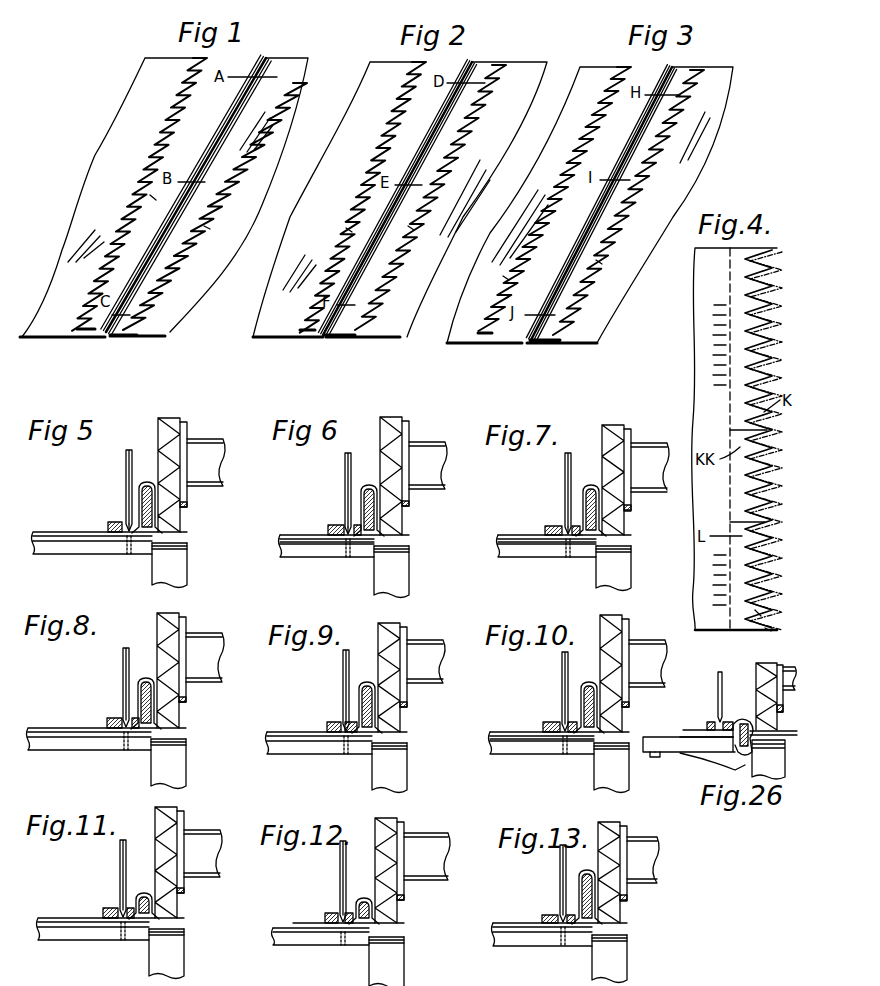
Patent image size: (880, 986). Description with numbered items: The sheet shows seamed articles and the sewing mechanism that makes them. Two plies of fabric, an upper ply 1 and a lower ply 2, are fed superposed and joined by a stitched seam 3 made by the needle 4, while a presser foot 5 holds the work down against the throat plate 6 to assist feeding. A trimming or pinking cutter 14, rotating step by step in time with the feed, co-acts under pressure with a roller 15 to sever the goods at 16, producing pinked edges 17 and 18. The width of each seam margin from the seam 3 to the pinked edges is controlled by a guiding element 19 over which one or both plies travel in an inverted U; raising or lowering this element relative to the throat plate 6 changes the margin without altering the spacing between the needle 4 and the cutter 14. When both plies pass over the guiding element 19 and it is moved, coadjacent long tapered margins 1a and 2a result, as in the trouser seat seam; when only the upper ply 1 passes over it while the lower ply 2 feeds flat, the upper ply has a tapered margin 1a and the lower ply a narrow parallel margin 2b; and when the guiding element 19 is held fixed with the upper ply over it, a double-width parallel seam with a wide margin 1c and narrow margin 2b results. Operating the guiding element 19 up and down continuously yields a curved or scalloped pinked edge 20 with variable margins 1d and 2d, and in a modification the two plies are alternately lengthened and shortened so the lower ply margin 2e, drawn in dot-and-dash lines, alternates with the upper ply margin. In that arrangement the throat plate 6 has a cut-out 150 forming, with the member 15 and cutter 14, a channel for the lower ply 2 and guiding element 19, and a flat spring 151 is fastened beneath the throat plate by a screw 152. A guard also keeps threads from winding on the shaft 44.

In FIG. 1, the upper ply 1 is at (42, 336).
In FIG. 2, the upper ply 1 is at (272, 341).
In FIG. 3, the upper ply 1 is at (462, 345).
In FIG. 4, the upper ply 1 is at (706, 632).
In FIG. 6, the upper ply 1 is at (320, 521).
In FIG. 7, the upper ply 1 is at (540, 523).
In FIG. 9, the upper ply 1 is at (337, 700).
In FIG. 10, the upper ply 1 is at (559, 691).
In FIG. 12, the upper ply 1 is at (348, 905).
In FIG. 13, the upper ply 1 is at (560, 883).
In FIG. 26, the upper ply 1 is at (690, 729).
In FIG. 1, the lower ply 2 is at (150, 338).
In FIG. 2, the lower ply 2 is at (380, 341).
In FIG. 3, the lower ply 2 is at (577, 346).
In FIG. 6, the lower ply 2 is at (344, 559).
In FIG. 7, the lower ply 2 is at (564, 559).
In FIG. 10, the lower ply 2 is at (542, 762).
In FIG. 12, the lower ply 2 is at (319, 912).
In FIG. 26, the lower ply 2 is at (679, 736).
In FIG. 1, the stitched seam 3 is at (106, 340).
In FIG. 2, the stitched seam 3 is at (323, 343).
In FIG. 3, the stitched seam 3 is at (527, 346).
In FIG. 4, the stitched seam 3 is at (731, 632).
In FIG. 5, the stitched seam 3 is at (133, 554).
In FIG. 6, the stitched seam 3 is at (349, 555).
In FIG. 7, the stitched seam 3 is at (563, 555).
In FIG. 5, the needle 4 is at (112, 490).
In FIG. 6, the needle 4 is at (333, 493).
In FIG. 7, the needle 4 is at (552, 493).
In FIG. 8, the needle 4 is at (112, 687).
In FIG. 9, the needle 4 is at (332, 690).
In FIG. 10, the needle 4 is at (550, 691).
In FIG. 11, the needle 4 is at (108, 878).
In FIG. 12, the needle 4 is at (331, 881).
In FIG. 13, the needle 4 is at (551, 883).
In FIG. 26, the needle 4 is at (716, 680).
In FIG. 5, the presser foot 5 is at (100, 515).
In FIG. 6, the presser foot 5 is at (340, 512).
In FIG. 7, the presser foot 5 is at (559, 514).
In FIG. 11, the presser foot 5 is at (107, 904).
In FIG. 12, the presser foot 5 is at (333, 905).
In FIG. 5, the throat plate 6 is at (110, 553).
In FIG. 6, the throat plate 6 is at (327, 546).
In FIG. 7, the throat plate 6 is at (545, 559).
In FIG. 8, the throat plate 6 is at (107, 755).
In FIG. 9, the throat plate 6 is at (319, 759).
In FIG. 10, the throat plate 6 is at (542, 759).
In FIG. 11, the throat plate 6 is at (111, 943).
In FIG. 12, the throat plate 6 is at (321, 949).
In FIG. 13, the throat plate 6 is at (542, 949).
In FIG. 26, the throat plate 6 is at (688, 745).
In FIG. 5, the trimming cutter 14 is at (193, 475).
In FIG. 6, the trimming cutter 14 is at (412, 472).
In FIG. 7, the trimming cutter 14 is at (632, 467).
In FIG. 8, the trimming cutter 14 is at (193, 660).
In FIG. 9, the trimming cutter 14 is at (412, 664).
In FIG. 10, the trimming cutter 14 is at (636, 668).
In FIG. 11, the trimming cutter 14 is at (193, 858).
In FIG. 12, the trimming cutter 14 is at (408, 863).
In FIG. 13, the trimming cutter 14 is at (631, 863).
In FIG. 26, the trimming cutter 14 is at (756, 678).
In FIG. 5, the roller 15 is at (185, 565).
In FIG. 6, the roller 15 is at (409, 572).
In FIG. 7, the roller 15 is at (631, 568).
In FIG. 8, the roller 15 is at (168, 764).
In FIG. 9, the roller 15 is at (389, 768).
In FIG. 10, the roller 15 is at (611, 768).
In FIG. 11, the roller 15 is at (166, 954).
In FIG. 13, the roller 15 is at (609, 959).
In FIG. 26, the roller 15 is at (768, 759).
In FIG. 5, the severing point 16 is at (190, 537).
In FIG. 6, the severing point 16 is at (409, 558).
In FIG. 7, the severing point 16 is at (634, 555).
In FIG. 1, the pinked edge 17 is at (160, 160).
In FIG. 2, the pinked edge 17 is at (365, 195).
In FIG. 3, the pinked edge 17 is at (583, 156).
In FIG. 1, the pinked edge 18 is at (236, 185).
In FIG. 2, the pinked edge 18 is at (405, 245).
In FIG. 3, the pinked edge 18 is at (632, 205).
In FIG. 5, the guiding element 19 is at (147, 483).
In FIG. 6, the guiding element 19 is at (369, 493).
In FIG. 7, the guiding element 19 is at (591, 494).
In FIG. 8, the guiding element 19 is at (120, 699).
In FIG. 9, the guiding element 19 is at (337, 707).
In FIG. 10, the guiding element 19 is at (567, 707).
In FIG. 11, the guiding element 19 is at (128, 938).
In FIG. 12, the guiding element 19 is at (355, 941).
In FIG. 13, the guiding element 19 is at (566, 897).
In FIG. 26, the guiding element 19 is at (772, 747).
In FIG. 4, the scalloped trimmed edge 20 is at (758, 404).
In FIG. 5, the shaft 44 is at (206, 462).
In FIG. 6, the shaft 44 is at (428, 465).
In FIG. 7, the shaft 44 is at (650, 467).
In FIG. 8, the shaft 44 is at (205, 657).
In FIG. 9, the shaft 44 is at (426, 661).
In FIG. 10, the shaft 44 is at (648, 663).
In FIG. 12, the shaft 44 is at (427, 872).
In FIG. 13, the shaft 44 is at (660, 860).
In FIG. 26, the cut-out 150 is at (727, 746).
In FIG. 26, the flat spring 151 is at (705, 764).
In FIG. 26, the screw 152 is at (651, 758).
In FIG. 1, the tapered seam margin 1a is at (153, 198).
In FIG. 2, the tapered seam margin 1a is at (348, 230).
In FIG. 3, the wide parallel seam margin 1c is at (527, 280).
In FIG. 4, the variable seam margin 1d is at (760, 613).
In FIG. 1, the tapered seam margin 2a is at (206, 227).
In FIG. 2, the narrow parallel seam margin 2b is at (410, 228).
In FIG. 3, the narrow parallel seam margin 2b is at (600, 262).
In FIG. 4, the variable seam margin 2d is at (768, 631).
In FIG. 4, the lower ply seam margin 2e is at (766, 492).